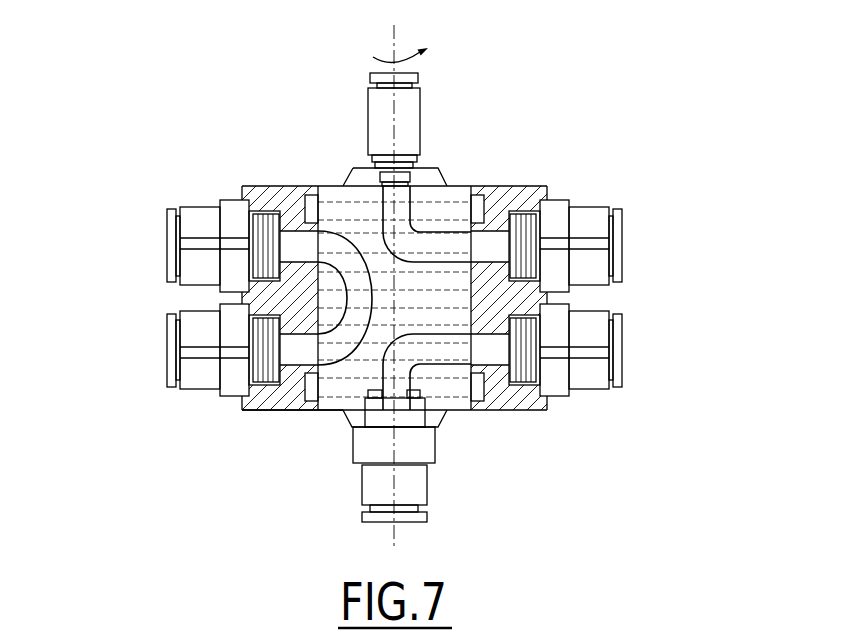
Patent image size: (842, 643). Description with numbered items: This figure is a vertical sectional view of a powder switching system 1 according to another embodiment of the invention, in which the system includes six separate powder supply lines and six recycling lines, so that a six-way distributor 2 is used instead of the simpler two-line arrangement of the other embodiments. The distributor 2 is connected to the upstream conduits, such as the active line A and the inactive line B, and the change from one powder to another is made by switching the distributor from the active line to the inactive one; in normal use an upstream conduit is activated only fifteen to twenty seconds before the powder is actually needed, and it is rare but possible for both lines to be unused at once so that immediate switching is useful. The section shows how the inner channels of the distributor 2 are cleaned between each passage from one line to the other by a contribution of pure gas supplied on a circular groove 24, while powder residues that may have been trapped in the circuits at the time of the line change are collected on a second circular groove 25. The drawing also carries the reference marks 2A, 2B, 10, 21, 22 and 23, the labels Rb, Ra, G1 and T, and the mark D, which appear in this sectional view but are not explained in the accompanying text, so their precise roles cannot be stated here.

The switching system 1 is at (152, 93).
The distributor 2 is at (337, 405).
The first face of body 2A is at (347, 430).
The second face of body 2B is at (458, 298).
The base of body 10 is at (253, 410).
The rotor 21 is at (332, 248).
The upper elbow passage 22 is at (442, 245).
The lower elbow passage 23 is at (445, 352).
The circular groove 24 is at (500, 196).
The second circular groove 25 is at (487, 390).
The return port Rb is at (168, 245).
The upstream conduit B is at (167, 350).
The return port Ra is at (623, 223).
The upstream conduit A is at (623, 350).
The gas supply port G1 is at (422, 110).
The exhaust port T is at (428, 488).
The rotation direction D is at (393, 30).